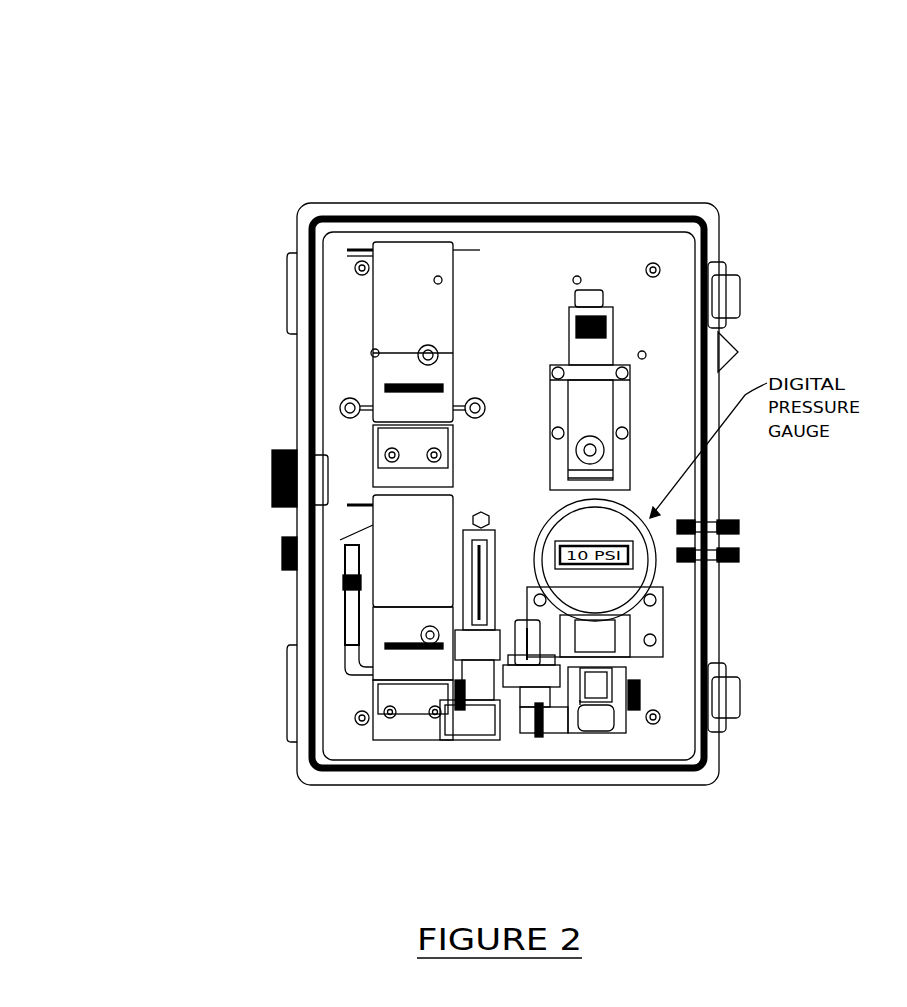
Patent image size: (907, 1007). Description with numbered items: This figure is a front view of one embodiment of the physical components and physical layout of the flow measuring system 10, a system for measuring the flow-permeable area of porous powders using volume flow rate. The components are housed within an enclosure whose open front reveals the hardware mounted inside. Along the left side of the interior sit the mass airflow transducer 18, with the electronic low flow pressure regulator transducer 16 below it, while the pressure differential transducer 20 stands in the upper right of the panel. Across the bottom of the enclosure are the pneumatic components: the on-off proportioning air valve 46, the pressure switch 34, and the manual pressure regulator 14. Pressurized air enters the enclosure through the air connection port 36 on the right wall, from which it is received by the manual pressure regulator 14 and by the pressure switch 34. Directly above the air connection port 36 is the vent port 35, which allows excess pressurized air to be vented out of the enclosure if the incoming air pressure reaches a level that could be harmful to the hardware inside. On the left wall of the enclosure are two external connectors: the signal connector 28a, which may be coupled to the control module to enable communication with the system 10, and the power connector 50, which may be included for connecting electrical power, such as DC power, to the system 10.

The flow measuring system 10 is at (705, 162).
The manual pressure regulator 14 is at (613, 733).
The electronic low flow pressure regulator transducer 16 is at (373, 595).
The mass airflow transducer 18 is at (403, 242).
The pressure differential transducer 20 is at (594, 290).
The signal connector 28a is at (274, 450).
The pressure switch 34 is at (510, 683).
The vent port 35 is at (730, 522).
The air connection port 36 is at (733, 563).
The on-off proportioning air valve 46 is at (480, 730).
The power connector 50 is at (282, 548).